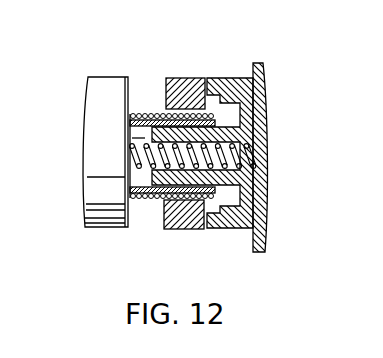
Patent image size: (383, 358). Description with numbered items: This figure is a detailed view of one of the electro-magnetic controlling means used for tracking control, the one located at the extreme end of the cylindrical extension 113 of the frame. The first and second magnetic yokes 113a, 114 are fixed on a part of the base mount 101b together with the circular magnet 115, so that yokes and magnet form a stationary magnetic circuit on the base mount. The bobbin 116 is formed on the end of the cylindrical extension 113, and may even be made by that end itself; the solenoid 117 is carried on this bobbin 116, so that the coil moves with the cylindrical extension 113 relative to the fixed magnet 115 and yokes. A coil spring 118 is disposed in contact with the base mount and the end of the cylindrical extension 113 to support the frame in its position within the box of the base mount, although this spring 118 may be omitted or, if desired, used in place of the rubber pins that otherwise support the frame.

The cylindrical extension 113 is at (98, 118).
The outer plate portion 113a is at (264, 122).
The second magnetic yoke 114 is at (172, 77).
The circular magnet 115 is at (213, 77).
The bobbin 116 is at (149, 113).
The solenoid 117 is at (146, 200).
The coil spring 118 is at (243, 157).
The part of the base mount 101b is at (260, 145).